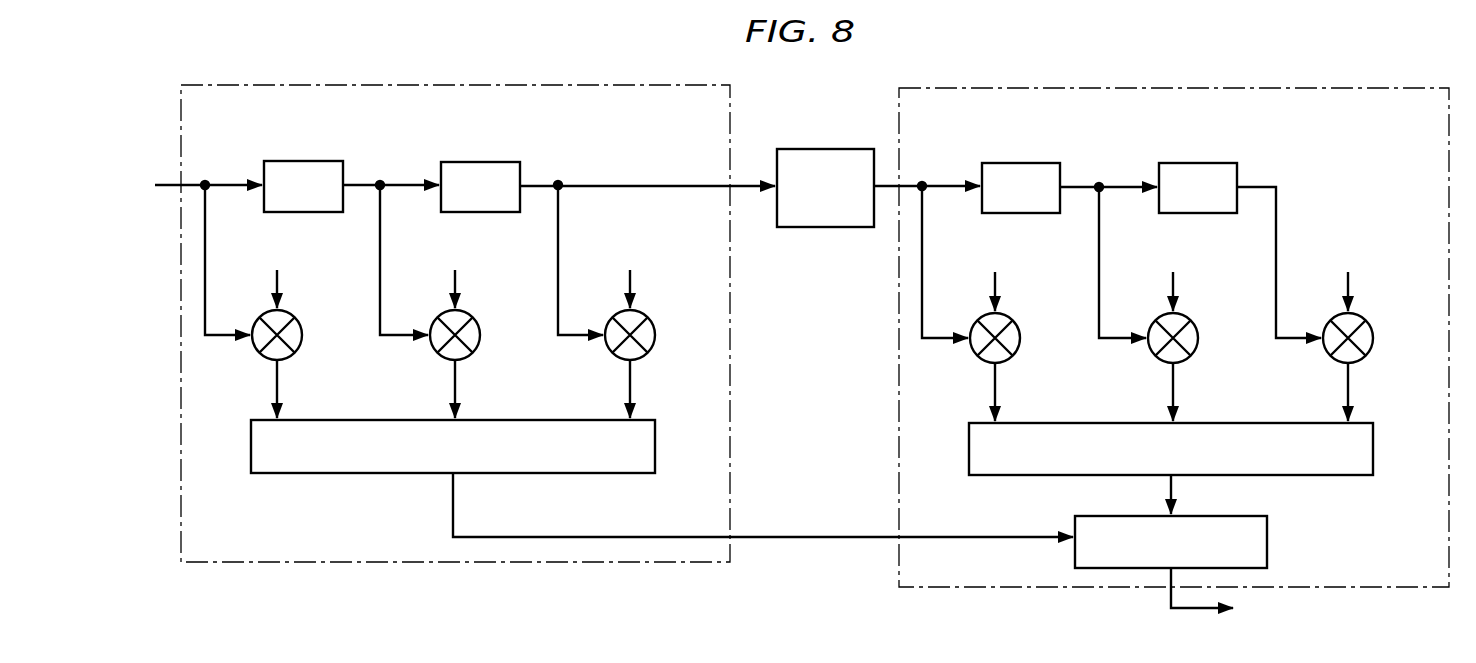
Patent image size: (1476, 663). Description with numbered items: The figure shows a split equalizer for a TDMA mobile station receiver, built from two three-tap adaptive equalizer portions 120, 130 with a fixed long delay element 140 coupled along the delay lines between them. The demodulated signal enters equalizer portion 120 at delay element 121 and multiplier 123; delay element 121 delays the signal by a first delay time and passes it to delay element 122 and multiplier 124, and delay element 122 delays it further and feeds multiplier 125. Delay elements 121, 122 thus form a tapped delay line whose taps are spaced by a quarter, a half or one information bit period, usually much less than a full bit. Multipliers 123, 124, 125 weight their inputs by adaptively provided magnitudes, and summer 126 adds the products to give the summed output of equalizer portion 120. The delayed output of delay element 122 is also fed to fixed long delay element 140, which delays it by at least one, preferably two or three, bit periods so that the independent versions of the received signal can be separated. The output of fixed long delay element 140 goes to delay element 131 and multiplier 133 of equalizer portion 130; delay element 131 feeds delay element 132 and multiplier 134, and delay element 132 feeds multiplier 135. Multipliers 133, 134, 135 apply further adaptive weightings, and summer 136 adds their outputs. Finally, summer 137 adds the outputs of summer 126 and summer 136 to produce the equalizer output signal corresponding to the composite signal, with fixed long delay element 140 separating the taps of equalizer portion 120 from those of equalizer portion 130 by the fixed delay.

The equalizer portion 120 is at (392, 85).
The delay element 121 is at (300, 161).
The delay element 122 is at (477, 162).
The multiplier 123 is at (303, 341).
The multiplier 124 is at (481, 341).
The multiplier 125 is at (656, 341).
The summer 126 is at (347, 474).
The equalizer portion 130 is at (1322, 88).
The delay element 131 is at (1017, 163).
The delay element 132 is at (1194, 163).
The multiplier 133 is at (1021, 344).
The multiplier 134 is at (1199, 344).
The multiplier 135 is at (1374, 344).
The summer 136 is at (1072, 423).
The summer 137 is at (1267, 551).
The fixed long delay element 140 is at (823, 149).